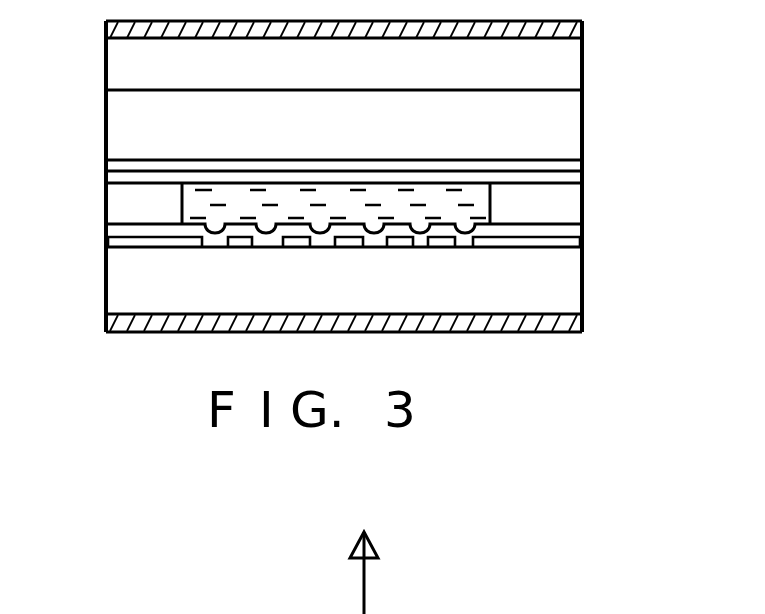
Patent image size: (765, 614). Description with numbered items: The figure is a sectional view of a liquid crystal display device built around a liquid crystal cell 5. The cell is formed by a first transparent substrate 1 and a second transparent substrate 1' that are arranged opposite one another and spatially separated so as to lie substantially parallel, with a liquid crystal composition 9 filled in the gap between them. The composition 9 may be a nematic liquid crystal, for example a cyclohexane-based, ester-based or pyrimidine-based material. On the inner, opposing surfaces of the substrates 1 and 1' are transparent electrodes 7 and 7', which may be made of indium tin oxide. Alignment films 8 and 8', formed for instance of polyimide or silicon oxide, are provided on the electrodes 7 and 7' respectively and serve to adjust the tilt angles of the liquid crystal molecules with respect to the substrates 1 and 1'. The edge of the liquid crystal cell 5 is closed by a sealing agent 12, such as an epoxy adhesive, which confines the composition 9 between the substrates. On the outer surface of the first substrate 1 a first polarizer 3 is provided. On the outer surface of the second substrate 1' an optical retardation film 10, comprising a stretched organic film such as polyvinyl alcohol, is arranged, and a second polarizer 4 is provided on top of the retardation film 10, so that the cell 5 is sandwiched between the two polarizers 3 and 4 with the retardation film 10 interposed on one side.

The second polarizer 4 is at (584, 27).
The optical retardation film 10 is at (577, 60).
The second transparent substrate 1' is at (385, 127).
The transparent electrode 7' is at (385, 152).
The alignment film 8' is at (384, 181).
The liquid crystal composition 9 is at (235, 193).
The sealing agent 12 is at (118, 202).
The alignment film 8 is at (382, 228).
The transparent electrode 7 is at (383, 255).
The first transparent substrate 1 is at (381, 297).
The first polarizer 3 is at (584, 328).
The liquid crystal cell 5 is at (685, 90).